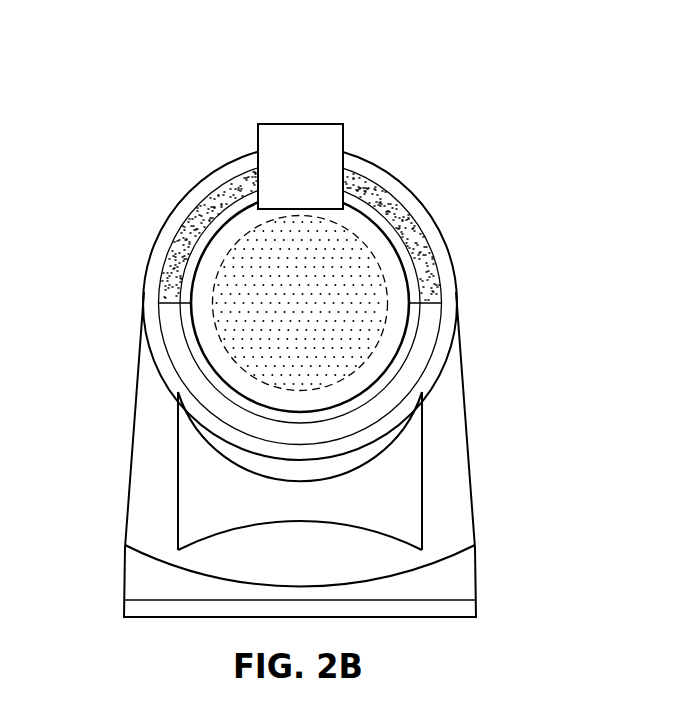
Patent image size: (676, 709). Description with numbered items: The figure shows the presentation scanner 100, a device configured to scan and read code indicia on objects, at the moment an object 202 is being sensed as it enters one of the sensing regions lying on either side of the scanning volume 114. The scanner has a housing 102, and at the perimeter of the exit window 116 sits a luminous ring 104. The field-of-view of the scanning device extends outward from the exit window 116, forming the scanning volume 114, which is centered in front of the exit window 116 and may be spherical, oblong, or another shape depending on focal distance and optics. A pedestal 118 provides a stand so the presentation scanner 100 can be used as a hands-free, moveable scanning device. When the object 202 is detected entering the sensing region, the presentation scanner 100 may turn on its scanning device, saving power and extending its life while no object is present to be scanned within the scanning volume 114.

The presentation scanner 100 is at (176, 90).
The housing 102 is at (205, 178).
The luminous ring 104 is at (182, 238).
The scanning volume 114 is at (387, 201).
The exit window 116 is at (395, 268).
The pedestal 118 is at (125, 482).
The object 202 is at (300, 123).